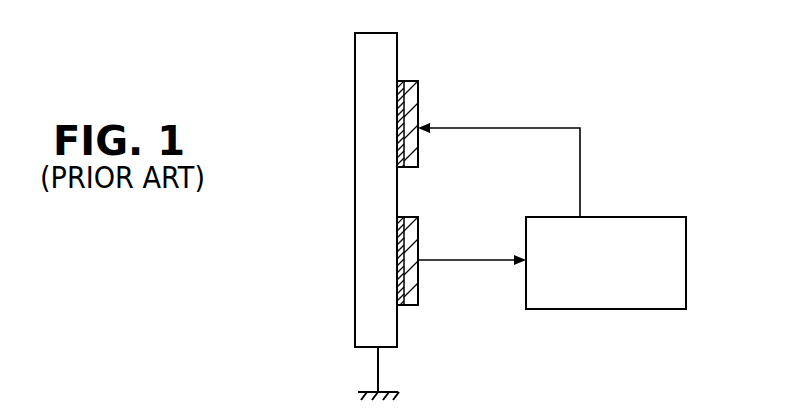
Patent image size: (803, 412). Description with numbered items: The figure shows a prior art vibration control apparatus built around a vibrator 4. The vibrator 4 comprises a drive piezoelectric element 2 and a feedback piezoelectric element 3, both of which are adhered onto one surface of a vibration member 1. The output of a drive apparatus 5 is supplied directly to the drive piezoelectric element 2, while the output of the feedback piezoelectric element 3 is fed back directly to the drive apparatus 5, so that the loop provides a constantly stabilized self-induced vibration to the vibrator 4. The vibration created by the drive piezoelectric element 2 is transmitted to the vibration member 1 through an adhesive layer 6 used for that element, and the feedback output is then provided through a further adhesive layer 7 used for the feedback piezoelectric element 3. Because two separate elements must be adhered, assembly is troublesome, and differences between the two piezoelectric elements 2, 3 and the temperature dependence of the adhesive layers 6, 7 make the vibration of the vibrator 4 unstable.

The vibration member 1 is at (367, 71).
The drive piezoelectric element 2 is at (426, 105).
The feedback piezoelectric element 3 is at (427, 279).
The vibrator 4 is at (389, 200).
The drive apparatus 5 is at (645, 224).
The adhesive layer 6 is at (398, 80).
The adhesive layer 7 is at (400, 306).